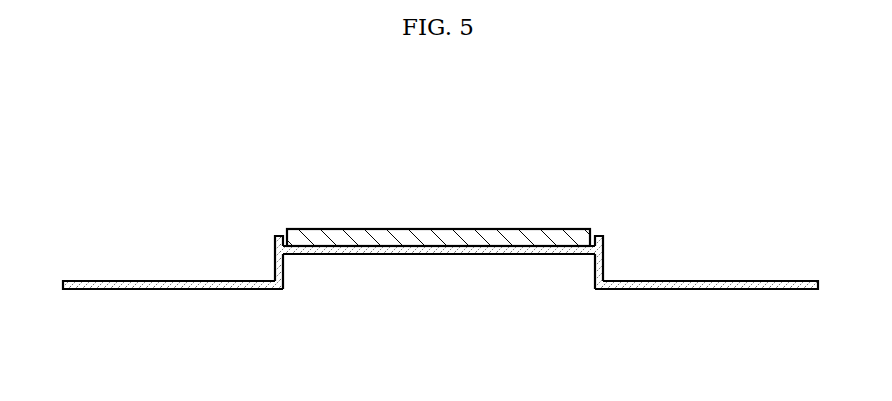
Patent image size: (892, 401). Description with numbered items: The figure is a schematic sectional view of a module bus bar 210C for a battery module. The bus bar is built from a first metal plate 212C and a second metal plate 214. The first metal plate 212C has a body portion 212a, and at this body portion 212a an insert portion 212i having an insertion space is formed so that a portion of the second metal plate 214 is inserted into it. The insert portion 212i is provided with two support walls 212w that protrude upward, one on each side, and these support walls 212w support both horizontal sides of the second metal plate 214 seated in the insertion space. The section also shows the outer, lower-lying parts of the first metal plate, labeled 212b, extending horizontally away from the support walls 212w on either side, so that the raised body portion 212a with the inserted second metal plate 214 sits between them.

The module bus bar 210C is at (224, 144).
The first metal plate 212C is at (440, 281).
The body portion 212a is at (368, 256).
The flange portion of window member 212b is at (193, 290).
The support wall 212w is at (275, 234).
The insert portion 212i is at (456, 250).
The second metal plate 214 is at (367, 228).